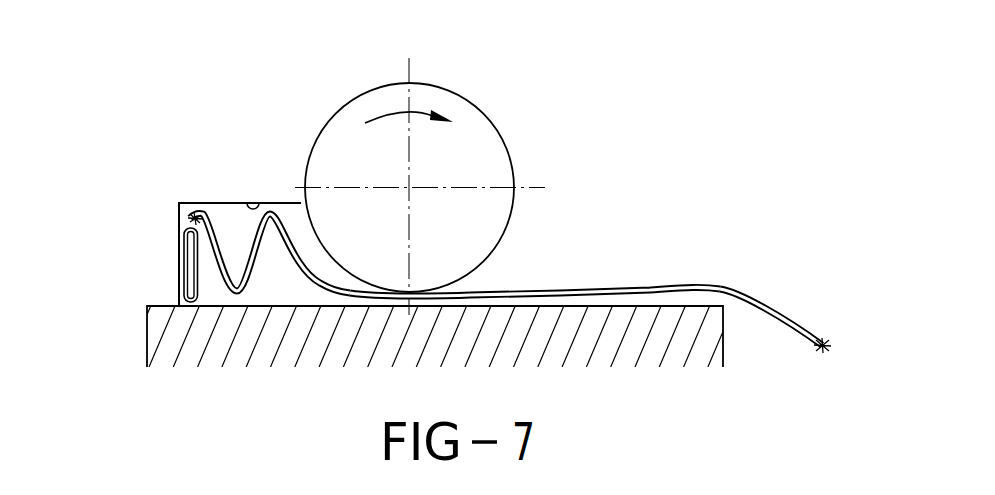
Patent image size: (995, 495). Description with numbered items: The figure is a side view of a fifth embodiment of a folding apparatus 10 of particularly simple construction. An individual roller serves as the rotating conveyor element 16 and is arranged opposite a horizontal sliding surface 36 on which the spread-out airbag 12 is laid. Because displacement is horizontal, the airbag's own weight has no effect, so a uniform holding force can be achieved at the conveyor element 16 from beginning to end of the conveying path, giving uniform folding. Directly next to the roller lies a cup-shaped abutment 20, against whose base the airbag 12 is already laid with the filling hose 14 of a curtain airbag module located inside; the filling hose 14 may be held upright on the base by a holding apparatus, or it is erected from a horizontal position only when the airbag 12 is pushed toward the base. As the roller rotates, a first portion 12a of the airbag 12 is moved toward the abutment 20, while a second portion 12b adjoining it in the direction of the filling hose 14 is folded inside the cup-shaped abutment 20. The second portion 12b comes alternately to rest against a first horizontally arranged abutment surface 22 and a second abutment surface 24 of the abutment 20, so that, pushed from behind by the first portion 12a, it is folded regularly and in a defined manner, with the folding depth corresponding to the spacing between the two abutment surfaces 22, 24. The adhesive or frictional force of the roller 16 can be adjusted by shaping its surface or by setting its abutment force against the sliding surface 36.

The folding apparatus 10 is at (104, 209).
The airbag 12 is at (509, 269).
The first portion of the airbag 12a is at (535, 290).
The second portion of the airbag 12b is at (204, 224).
The filling hose 14 is at (192, 276).
The rotating conveyor element 16 is at (493, 123).
The cup-shaped abutment 20 is at (192, 196).
The first abutment surface 22 is at (260, 203).
The second abutment surface 24 is at (312, 306).
The sliding surface 36 is at (416, 300).